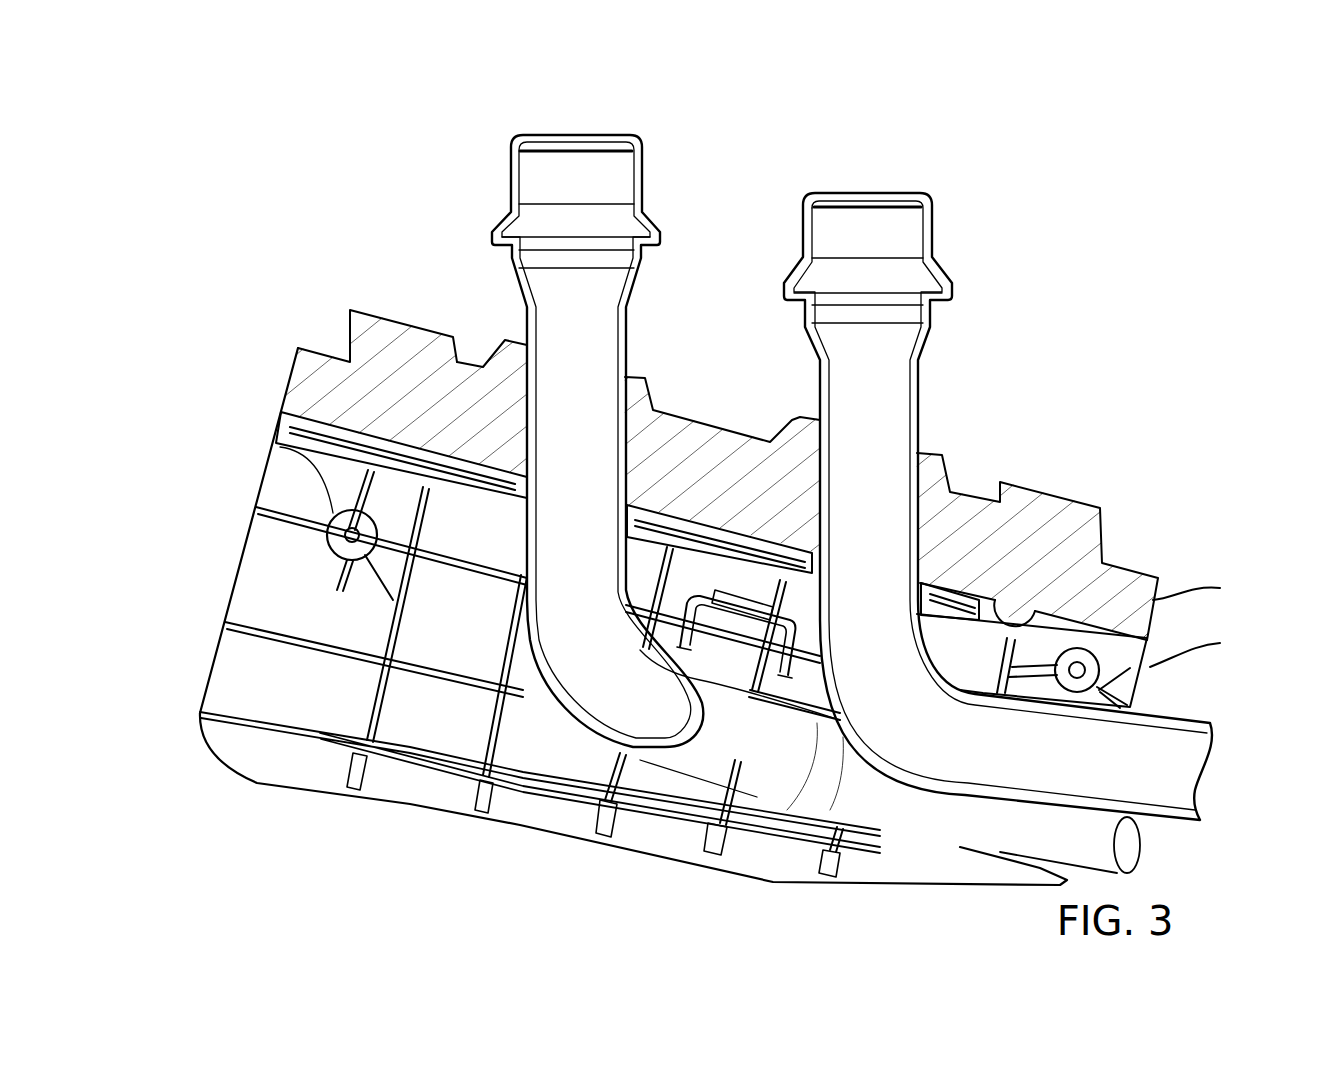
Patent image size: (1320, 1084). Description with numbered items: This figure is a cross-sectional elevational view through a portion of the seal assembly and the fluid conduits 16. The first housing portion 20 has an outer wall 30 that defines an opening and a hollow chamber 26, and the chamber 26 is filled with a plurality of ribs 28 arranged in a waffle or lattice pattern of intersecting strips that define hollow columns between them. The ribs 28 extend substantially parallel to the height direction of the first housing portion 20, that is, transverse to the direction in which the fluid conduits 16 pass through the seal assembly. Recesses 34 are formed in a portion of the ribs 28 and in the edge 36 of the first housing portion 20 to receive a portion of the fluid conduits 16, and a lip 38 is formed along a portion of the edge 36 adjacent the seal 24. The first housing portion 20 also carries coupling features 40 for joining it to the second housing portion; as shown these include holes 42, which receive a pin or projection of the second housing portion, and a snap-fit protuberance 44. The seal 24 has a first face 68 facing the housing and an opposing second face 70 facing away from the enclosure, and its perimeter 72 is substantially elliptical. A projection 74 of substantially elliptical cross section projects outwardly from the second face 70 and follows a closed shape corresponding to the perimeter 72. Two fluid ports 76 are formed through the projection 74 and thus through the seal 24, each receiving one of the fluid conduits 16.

The fluid conduits 16 is at (578, 135).
The first housing portion 20 is at (248, 510).
The seal 24 is at (1065, 525).
The hollow chamber 26 is at (220, 672).
The ribs 28 is at (377, 707).
The outer wall 30 is at (240, 612).
The recesses 34 is at (636, 518).
The edge 36 is at (280, 445).
The lip 38 is at (288, 420).
The coupling features 40 is at (703, 727).
The holes 42 is at (345, 535).
The snap-fit protuberance 44 is at (745, 608).
The first face 68 is at (1001, 600).
The second face 70 is at (397, 315).
The perimeter 72 is at (1165, 600).
The projection 74 is at (433, 337).
The fluid ports 76 is at (525, 345).